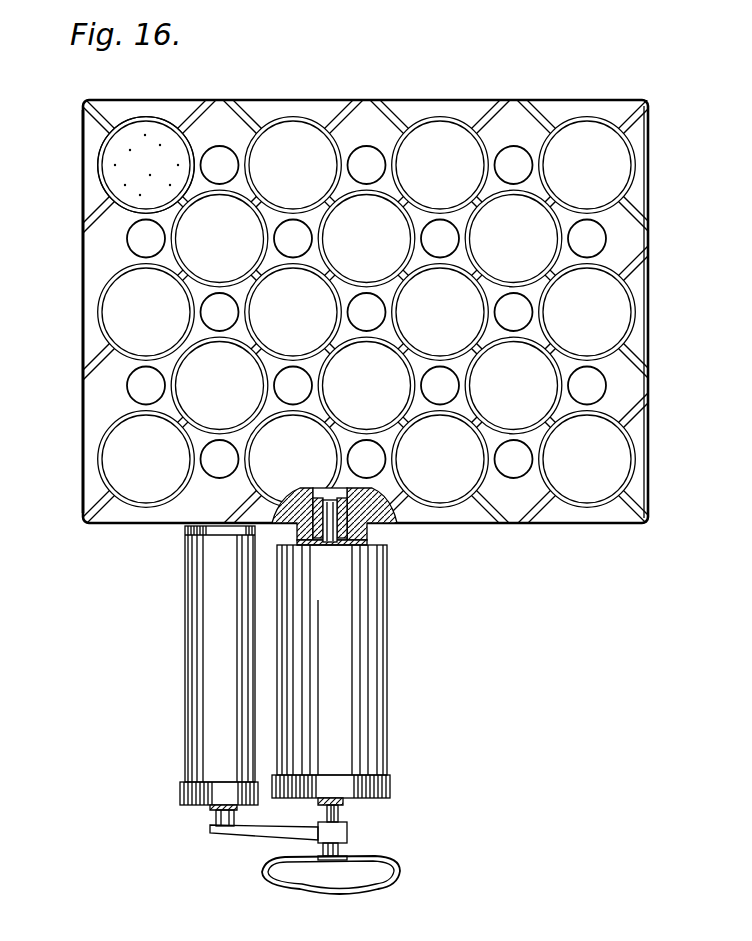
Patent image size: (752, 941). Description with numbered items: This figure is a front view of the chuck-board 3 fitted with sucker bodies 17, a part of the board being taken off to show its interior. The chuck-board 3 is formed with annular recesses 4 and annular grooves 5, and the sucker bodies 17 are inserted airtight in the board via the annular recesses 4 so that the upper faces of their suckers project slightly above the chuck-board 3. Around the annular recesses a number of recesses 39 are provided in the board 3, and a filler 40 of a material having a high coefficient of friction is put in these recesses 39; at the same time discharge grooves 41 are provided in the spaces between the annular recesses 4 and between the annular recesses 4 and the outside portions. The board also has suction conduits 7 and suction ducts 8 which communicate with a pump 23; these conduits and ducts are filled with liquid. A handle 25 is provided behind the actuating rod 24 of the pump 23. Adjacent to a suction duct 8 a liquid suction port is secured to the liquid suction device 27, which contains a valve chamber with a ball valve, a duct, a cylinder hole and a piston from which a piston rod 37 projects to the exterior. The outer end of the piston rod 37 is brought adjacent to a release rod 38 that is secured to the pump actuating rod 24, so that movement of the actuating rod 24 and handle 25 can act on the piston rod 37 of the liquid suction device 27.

The chuck-board 3 is at (380, 100).
The annular recess 4 is at (141, 118).
The annular groove 5 is at (124, 121).
The sucker body 17 is at (163, 124).
The filler 40 is at (510, 146).
The recess 39 is at (542, 124).
The discharge groove 41 is at (83, 384).
The suction conduit 7 is at (356, 487).
The suction duct 8 is at (352, 531).
The liquid suction device 27 is at (184, 606).
The pump 23 is at (371, 667).
The actuating rod 24 is at (347, 813).
The piston rod 37 is at (216, 818).
The release rod 38 is at (242, 831).
The handle 25 is at (298, 888).